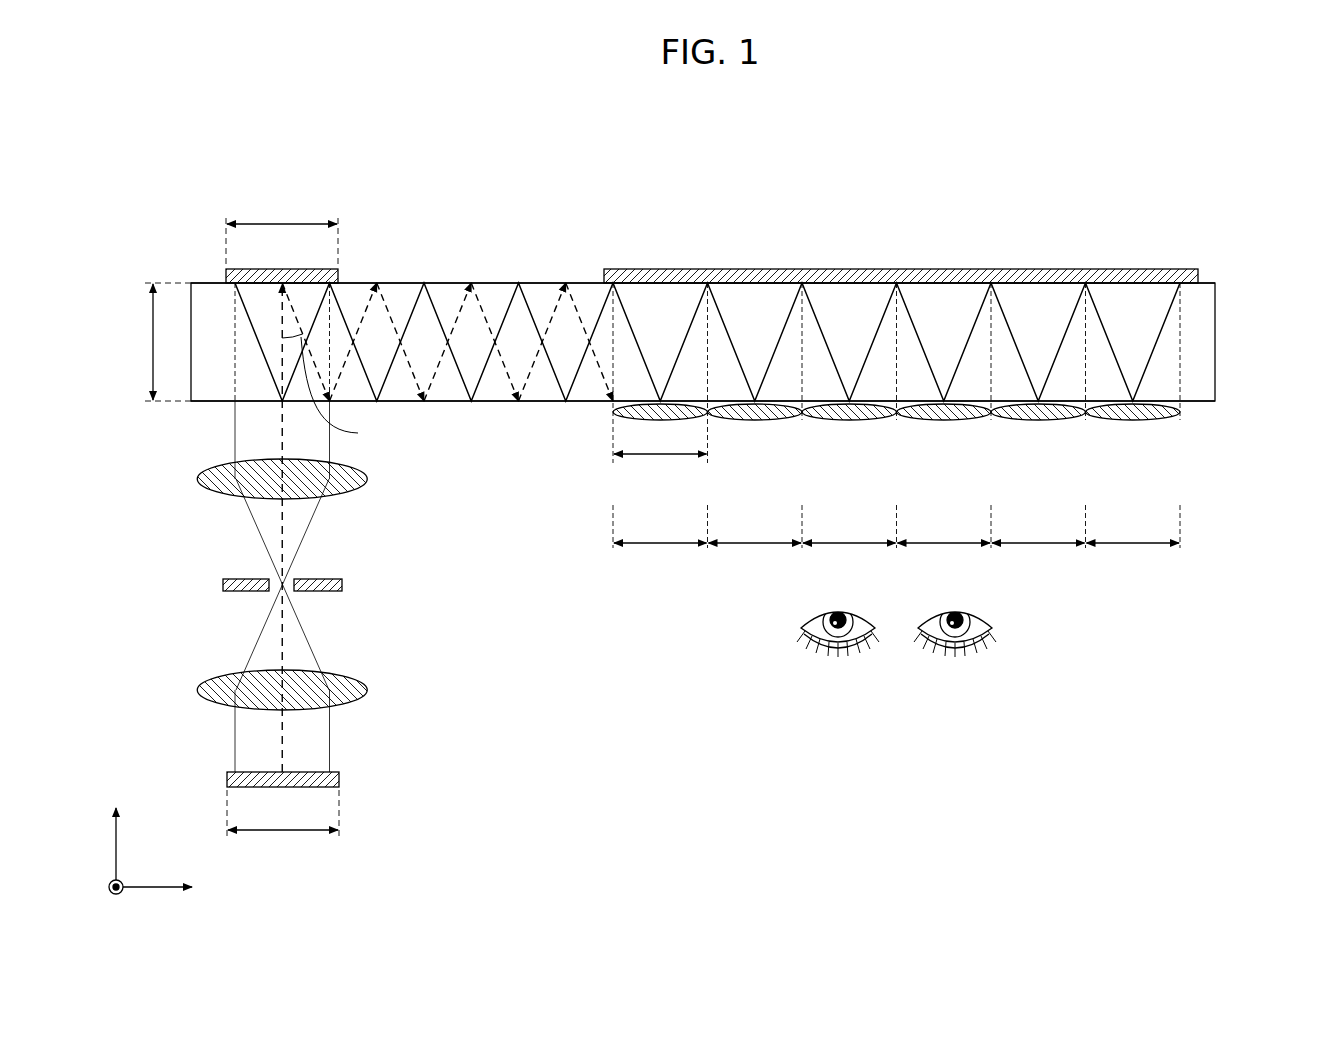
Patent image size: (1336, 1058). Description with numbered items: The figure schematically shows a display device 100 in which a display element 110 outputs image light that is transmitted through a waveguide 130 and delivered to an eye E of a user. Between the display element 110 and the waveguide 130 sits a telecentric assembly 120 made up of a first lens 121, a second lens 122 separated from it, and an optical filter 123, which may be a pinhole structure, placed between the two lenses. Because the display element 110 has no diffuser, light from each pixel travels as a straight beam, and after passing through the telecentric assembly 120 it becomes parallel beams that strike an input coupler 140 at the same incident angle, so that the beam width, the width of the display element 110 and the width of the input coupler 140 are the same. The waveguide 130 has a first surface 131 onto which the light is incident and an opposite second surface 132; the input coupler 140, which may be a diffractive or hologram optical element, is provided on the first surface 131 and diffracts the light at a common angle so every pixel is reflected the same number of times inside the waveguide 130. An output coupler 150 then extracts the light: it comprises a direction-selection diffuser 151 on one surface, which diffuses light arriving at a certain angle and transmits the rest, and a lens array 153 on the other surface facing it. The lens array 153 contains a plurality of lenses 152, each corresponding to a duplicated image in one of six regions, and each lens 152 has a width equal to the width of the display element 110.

The display device 100 is at (1203, 220).
The display element 110 is at (340, 779).
The telecentric assembly 120 is at (360, 528).
The first lens 121 is at (331, 669).
The second lens 122 is at (365, 479).
The optical filter 123 is at (343, 585).
The waveguide 130 is at (750, 382).
The first surface 131 is at (490, 282).
The second surface 132 is at (490, 402).
The input coupler 140 is at (226, 273).
The output coupler 150 is at (961, 581).
The direction-selection diffuser 151 is at (1042, 268).
The lens 152 is at (1137, 419).
The lens array 153 is at (961, 440).
The eye E is at (992, 628).